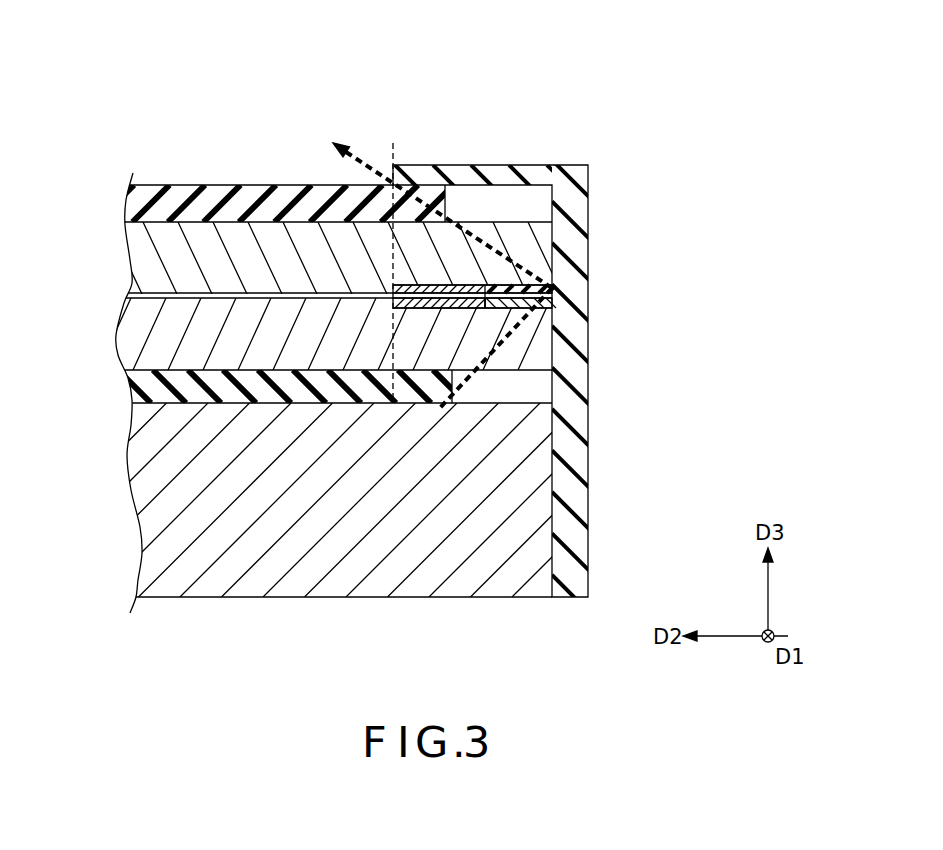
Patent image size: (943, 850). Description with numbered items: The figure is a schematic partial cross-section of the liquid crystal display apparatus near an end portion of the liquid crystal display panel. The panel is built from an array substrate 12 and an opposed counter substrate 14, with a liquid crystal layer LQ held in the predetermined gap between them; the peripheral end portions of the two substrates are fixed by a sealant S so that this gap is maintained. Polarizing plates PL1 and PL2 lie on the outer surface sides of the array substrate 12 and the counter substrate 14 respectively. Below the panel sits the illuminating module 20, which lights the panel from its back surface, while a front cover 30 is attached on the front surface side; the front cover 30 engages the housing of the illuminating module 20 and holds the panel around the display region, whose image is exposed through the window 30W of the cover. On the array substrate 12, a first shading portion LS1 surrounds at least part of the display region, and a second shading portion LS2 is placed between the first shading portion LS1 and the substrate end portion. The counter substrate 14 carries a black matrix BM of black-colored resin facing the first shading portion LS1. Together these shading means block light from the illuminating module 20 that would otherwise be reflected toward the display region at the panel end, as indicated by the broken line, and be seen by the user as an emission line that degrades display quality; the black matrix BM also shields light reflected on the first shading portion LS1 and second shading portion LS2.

The front cover 30 is at (603, 188).
The window 30W is at (393, 183).
The black matrix BM is at (445, 285).
The counter substrate 14 is at (556, 242).
The sealant S is at (553, 288).
The array substrate 12 is at (556, 332).
The first shading portion LS1 is at (452, 308).
The second shading portion LS2 is at (515, 308).
The illuminating module 20 is at (556, 463).
The polarizing plate PL2 is at (135, 204).
The liquid crystal layer LQ is at (135, 297).
The polarizing plate PL1 is at (128, 382).